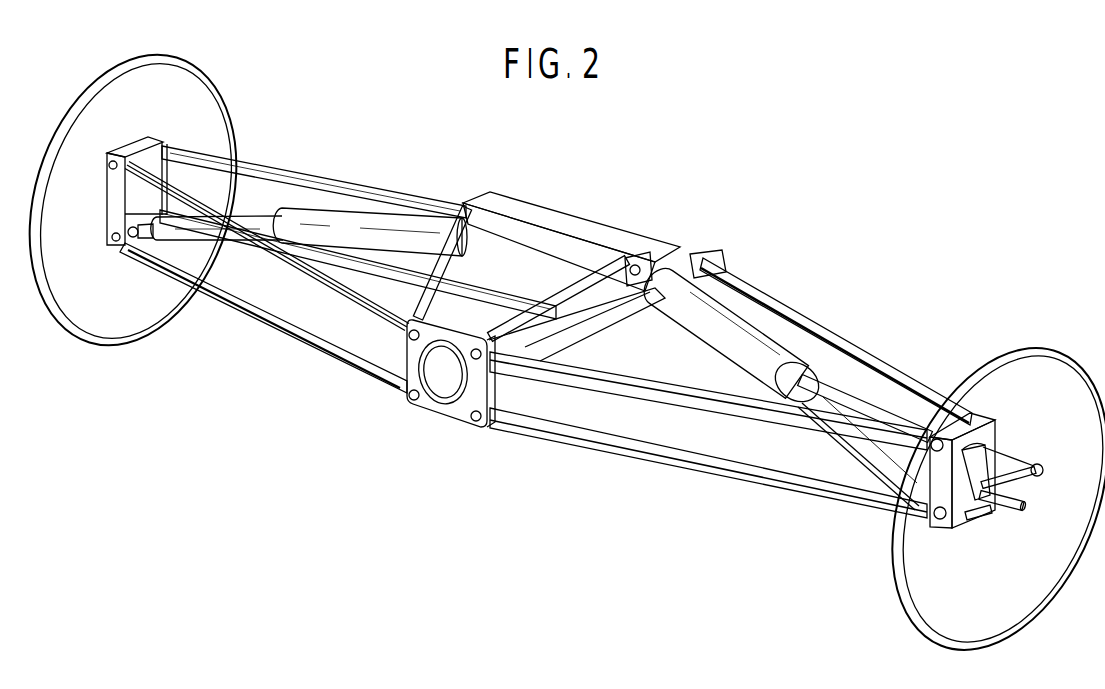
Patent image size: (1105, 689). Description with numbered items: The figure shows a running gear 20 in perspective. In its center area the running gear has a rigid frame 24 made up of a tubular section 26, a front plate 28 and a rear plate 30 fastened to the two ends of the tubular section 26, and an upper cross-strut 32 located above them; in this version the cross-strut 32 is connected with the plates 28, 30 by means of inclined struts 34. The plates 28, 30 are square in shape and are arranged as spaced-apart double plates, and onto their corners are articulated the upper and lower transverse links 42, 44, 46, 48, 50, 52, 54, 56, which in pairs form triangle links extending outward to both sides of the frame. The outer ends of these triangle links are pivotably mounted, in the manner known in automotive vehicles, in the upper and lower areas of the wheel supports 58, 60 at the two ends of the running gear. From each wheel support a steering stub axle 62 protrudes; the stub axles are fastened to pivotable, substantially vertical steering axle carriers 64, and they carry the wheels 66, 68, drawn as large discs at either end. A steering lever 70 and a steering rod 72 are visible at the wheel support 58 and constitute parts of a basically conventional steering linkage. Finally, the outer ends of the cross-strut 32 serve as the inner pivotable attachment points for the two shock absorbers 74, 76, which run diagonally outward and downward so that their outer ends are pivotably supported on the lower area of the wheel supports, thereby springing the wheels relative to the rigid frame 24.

The running gear 20 is at (915, 297).
The rigid frame 24 is at (660, 228).
The tubular section 26 is at (636, 328).
The front plate 28 is at (452, 408).
The rear plate 30 is at (722, 252).
The upper cross-strut 32 is at (517, 200).
The inclined struts 34 is at (505, 327).
The transverse link 42 is at (631, 380).
The transverse link 44 is at (808, 318).
The transverse link 46 is at (665, 456).
The transverse link 48 is at (900, 445).
The transverse link 50 is at (283, 263).
The transverse link 52 is at (299, 170).
The transverse link 54 is at (284, 333).
The transverse link 56 is at (353, 262).
The wheel support 58 is at (993, 437).
The wheel support 60 is at (111, 207).
The steering stub axle 62 is at (1007, 514).
The steering axle carrier 64 is at (978, 515).
The wheel 66 is at (1062, 372).
The wheel 68 is at (213, 113).
The steering lever 70 is at (1030, 478).
The steering rod 72 is at (1027, 454).
The shock absorber 74 is at (723, 304).
The shock absorber 76 is at (395, 212).